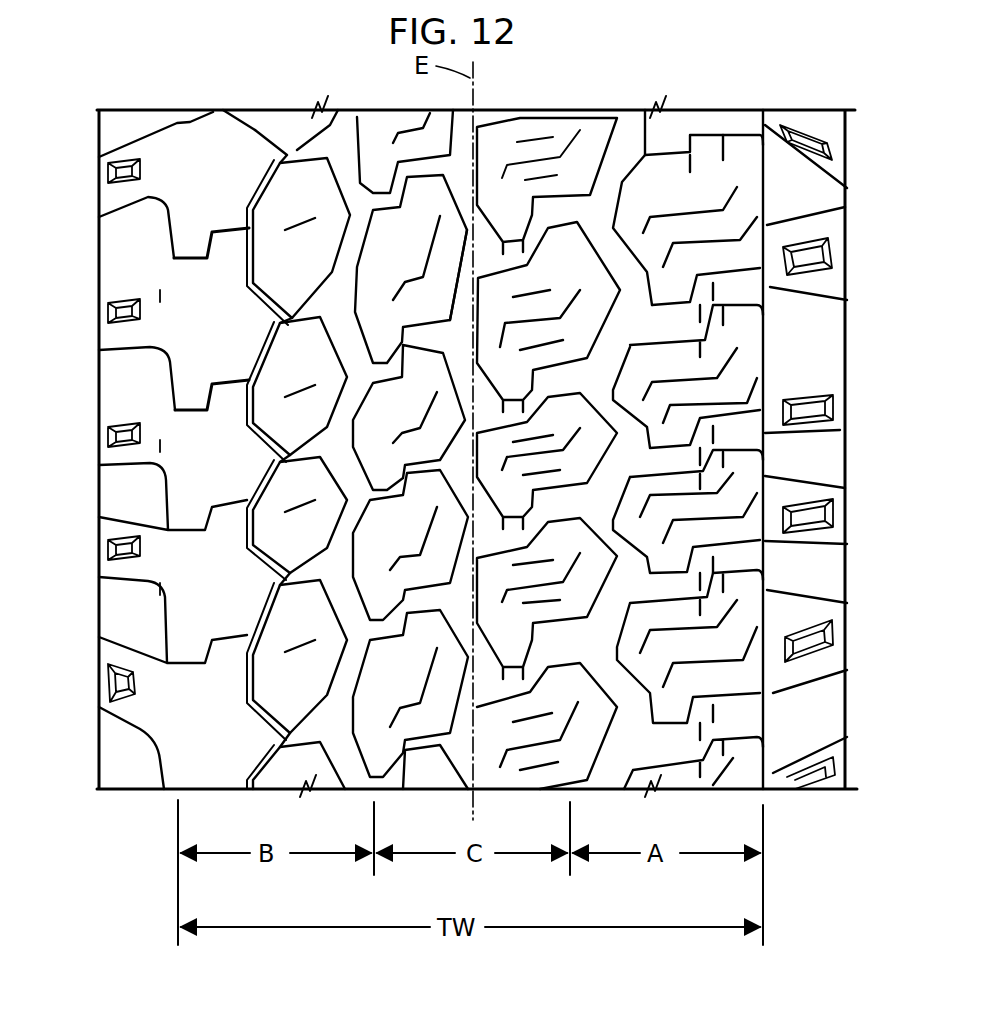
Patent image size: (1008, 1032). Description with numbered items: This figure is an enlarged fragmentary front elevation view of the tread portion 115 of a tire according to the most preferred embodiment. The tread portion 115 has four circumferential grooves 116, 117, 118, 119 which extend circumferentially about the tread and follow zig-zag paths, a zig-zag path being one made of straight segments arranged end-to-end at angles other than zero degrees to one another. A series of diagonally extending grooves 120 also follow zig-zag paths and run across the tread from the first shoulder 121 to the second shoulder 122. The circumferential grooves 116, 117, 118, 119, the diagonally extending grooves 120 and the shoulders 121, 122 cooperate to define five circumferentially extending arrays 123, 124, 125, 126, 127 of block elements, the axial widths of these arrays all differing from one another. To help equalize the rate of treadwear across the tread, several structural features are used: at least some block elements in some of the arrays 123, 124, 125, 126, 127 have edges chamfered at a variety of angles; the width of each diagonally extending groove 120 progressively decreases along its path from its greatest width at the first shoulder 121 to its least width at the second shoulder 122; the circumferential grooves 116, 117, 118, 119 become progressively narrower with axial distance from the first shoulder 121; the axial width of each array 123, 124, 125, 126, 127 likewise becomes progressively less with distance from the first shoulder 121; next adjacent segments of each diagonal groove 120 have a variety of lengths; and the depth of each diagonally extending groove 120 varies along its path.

The tread portion 115 is at (262, 100).
The circumferential groove 116 is at (252, 127).
The circumferential groove 117 is at (346, 116).
The circumferential groove 118 is at (468, 133).
The circumferential groove 119 is at (618, 128).
The diagonally extending groove 120 is at (720, 142).
The first shoulder 121 is at (762, 235).
The second shoulder 122 is at (176, 295).
The circumferentially extending array of block elements 123 is at (203, 143).
The circumferentially extending array of block elements 124 is at (291, 104).
The circumferentially extending array of block elements 125 is at (386, 106).
The circumferentially extending array of block elements 126 is at (566, 116).
The circumferentially extending array of block elements 127 is at (690, 112).